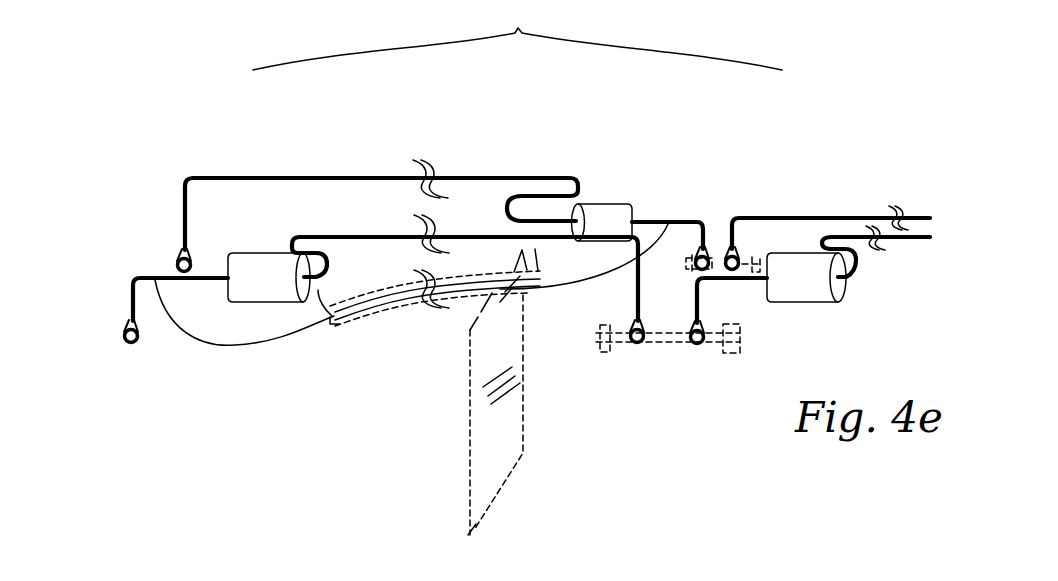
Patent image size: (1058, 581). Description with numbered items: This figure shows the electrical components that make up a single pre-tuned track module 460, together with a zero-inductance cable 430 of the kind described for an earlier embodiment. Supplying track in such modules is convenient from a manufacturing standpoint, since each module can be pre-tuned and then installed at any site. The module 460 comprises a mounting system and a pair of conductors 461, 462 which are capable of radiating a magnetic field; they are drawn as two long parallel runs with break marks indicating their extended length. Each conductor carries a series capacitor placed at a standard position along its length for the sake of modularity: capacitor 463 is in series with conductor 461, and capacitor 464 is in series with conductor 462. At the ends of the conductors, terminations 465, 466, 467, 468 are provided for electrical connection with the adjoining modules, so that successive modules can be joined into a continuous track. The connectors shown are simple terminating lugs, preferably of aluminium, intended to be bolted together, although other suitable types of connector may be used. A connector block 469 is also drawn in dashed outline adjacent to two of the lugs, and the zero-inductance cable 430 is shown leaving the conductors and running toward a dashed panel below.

The module 460 is at (517, 38).
The conductor 461 is at (266, 180).
The conductor 462 is at (333, 234).
The series capacitor 463 is at (607, 203).
The series capacitor 464 is at (227, 268).
The termination 465 is at (158, 261).
The termination 466 is at (117, 334).
The termination 467 is at (695, 255).
The termination 468 is at (633, 320).
The terminal block 469 is at (688, 345).
The zero-inductance cable 430 is at (565, 250).